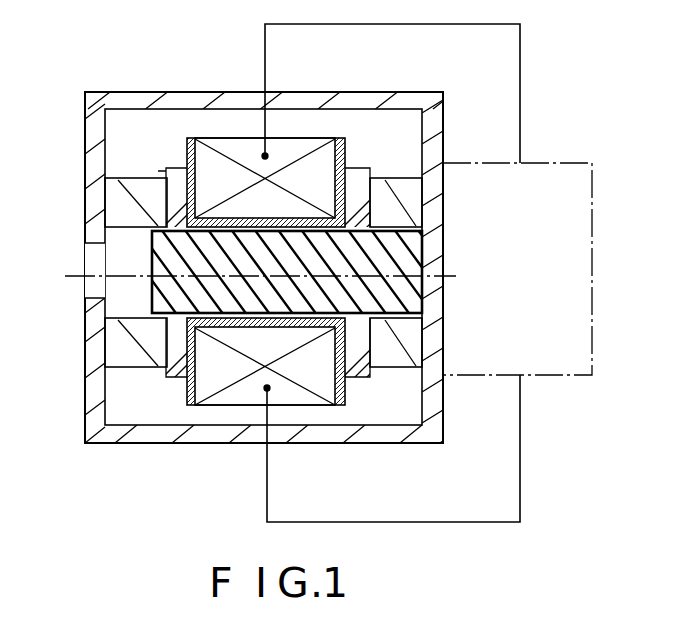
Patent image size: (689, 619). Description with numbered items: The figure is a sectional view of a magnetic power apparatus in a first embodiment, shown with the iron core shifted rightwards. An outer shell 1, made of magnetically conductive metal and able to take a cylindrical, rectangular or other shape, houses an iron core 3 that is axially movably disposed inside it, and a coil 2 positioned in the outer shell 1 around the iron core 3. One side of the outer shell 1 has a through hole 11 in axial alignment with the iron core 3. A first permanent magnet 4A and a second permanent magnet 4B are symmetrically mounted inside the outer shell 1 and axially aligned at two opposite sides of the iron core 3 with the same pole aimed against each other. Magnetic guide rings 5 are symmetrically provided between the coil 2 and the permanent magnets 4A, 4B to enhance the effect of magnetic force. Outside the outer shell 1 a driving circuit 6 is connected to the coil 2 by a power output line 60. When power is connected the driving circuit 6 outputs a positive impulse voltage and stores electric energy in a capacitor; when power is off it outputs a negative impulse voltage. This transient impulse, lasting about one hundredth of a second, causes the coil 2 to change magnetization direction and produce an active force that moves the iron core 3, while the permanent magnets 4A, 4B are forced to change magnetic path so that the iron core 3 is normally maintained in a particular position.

The outer shell 1 is at (79, 129).
The through hole 11 is at (94, 262).
The coil 2 is at (240, 145).
The iron core 3 is at (295, 247).
The first permanent magnet 4A is at (131, 367).
The second permanent magnet 4B is at (405, 367).
The magnetic guide ring 5 is at (178, 377).
The driving circuit 6 is at (576, 247).
The power output line 60 is at (520, 107).